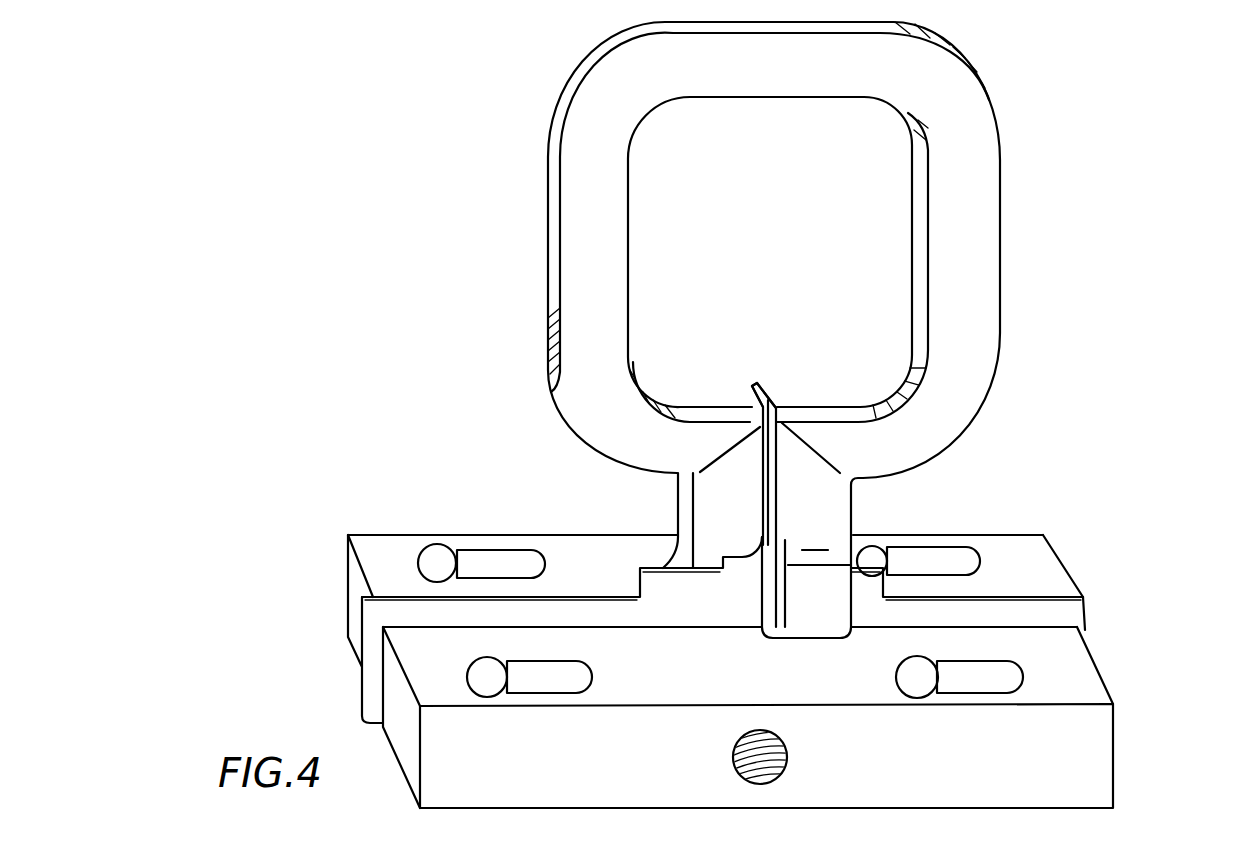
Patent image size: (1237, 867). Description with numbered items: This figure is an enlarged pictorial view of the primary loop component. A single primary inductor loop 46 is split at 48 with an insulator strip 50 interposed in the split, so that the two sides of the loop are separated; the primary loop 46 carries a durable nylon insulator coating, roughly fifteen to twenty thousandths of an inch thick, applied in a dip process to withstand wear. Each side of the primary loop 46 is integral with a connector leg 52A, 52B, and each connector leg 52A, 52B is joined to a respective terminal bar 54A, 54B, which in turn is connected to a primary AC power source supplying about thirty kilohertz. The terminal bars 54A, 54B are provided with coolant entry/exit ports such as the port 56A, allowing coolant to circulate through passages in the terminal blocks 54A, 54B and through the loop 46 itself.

The primary inductor loop 46 is at (550, 127).
The split 48 is at (770, 480).
The insulator strip 50 is at (752, 383).
The connector leg 52A is at (831, 516).
The connector leg 52B is at (680, 503).
The terminal bar 54A is at (1087, 668).
The terminal bar 54B is at (398, 541).
The coolant entry/exit port 56A is at (782, 775).